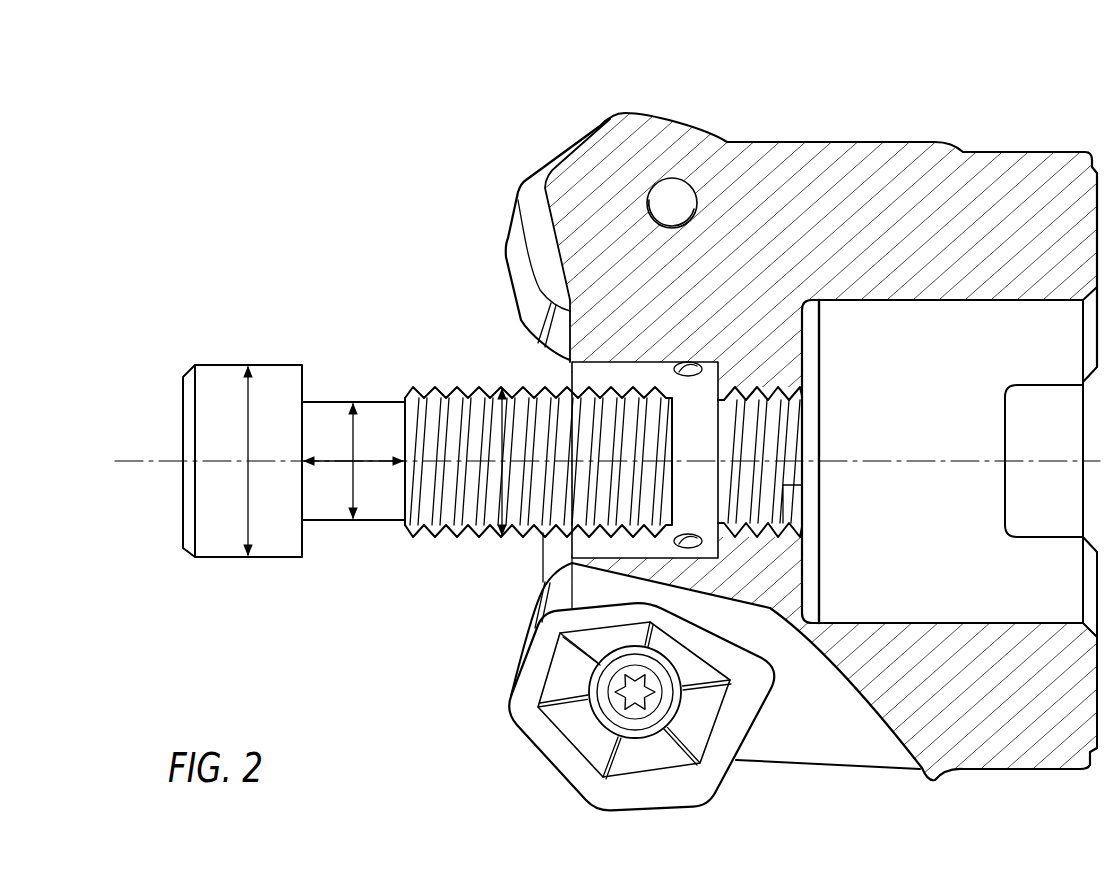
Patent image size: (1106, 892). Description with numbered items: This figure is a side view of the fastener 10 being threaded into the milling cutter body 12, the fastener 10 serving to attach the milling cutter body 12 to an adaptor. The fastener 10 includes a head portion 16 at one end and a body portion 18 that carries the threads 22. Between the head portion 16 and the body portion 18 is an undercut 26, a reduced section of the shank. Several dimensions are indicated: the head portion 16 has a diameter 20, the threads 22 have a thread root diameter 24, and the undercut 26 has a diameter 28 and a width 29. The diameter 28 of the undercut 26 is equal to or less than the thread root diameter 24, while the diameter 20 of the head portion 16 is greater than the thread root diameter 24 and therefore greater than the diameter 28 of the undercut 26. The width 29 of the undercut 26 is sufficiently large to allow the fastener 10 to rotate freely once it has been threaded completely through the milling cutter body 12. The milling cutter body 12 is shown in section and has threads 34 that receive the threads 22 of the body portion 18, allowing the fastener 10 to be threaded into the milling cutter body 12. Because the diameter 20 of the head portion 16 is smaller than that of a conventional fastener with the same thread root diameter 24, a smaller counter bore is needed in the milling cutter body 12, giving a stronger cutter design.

The fastener 10 is at (125, 416).
The milling cutter body 12 is at (1026, 102).
The head portion 16 is at (216, 364).
The body portion 18 is at (462, 430).
The diameter 20 is at (247, 461).
The threads 22 is at (467, 437).
The thread root diameter 24 is at (500, 467).
The undercut 26 is at (358, 401).
The diameter 28 is at (353, 463).
The width 29 is at (338, 461).
The threads 34 is at (757, 381).